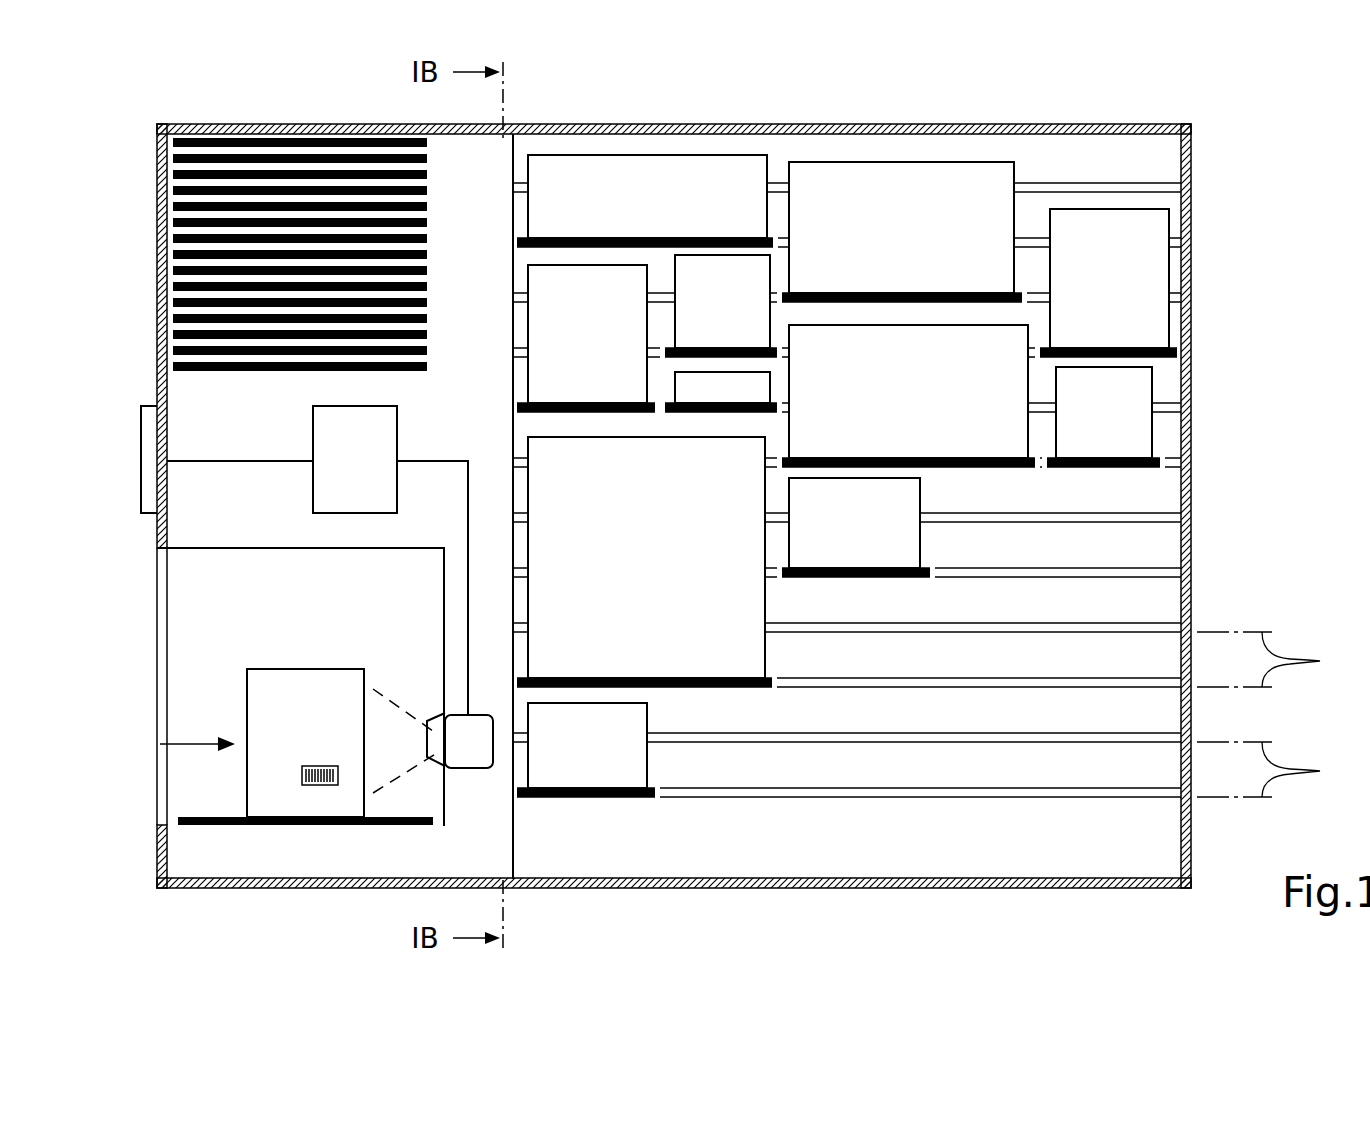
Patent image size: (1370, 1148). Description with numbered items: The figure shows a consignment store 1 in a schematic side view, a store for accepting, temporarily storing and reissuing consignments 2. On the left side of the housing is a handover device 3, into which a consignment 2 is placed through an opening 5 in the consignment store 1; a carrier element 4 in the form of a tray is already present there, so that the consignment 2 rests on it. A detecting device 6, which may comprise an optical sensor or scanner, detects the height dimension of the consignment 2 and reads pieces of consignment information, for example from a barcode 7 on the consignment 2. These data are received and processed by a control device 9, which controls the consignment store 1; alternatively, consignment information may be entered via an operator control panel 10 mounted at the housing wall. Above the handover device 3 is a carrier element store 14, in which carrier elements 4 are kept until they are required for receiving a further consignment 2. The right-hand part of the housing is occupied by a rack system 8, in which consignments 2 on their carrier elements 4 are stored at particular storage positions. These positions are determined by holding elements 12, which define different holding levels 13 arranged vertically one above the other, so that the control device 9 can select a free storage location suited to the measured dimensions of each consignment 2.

The consignment store 1 is at (1252, 183).
The consignment 2 is at (638, 212).
The handover device 3 is at (227, 615).
The carrier element 4 is at (902, 577).
The opening 5 is at (187, 653).
The detecting device 6 is at (433, 727).
The barcode 7 is at (322, 766).
The rack system 8 is at (1104, 155).
The control device 9 is at (344, 475).
The operator control panel 10 is at (150, 470).
The holding element 12 is at (943, 680).
The holding level 13 is at (1277, 714).
The carrier element store 14 is at (243, 175).